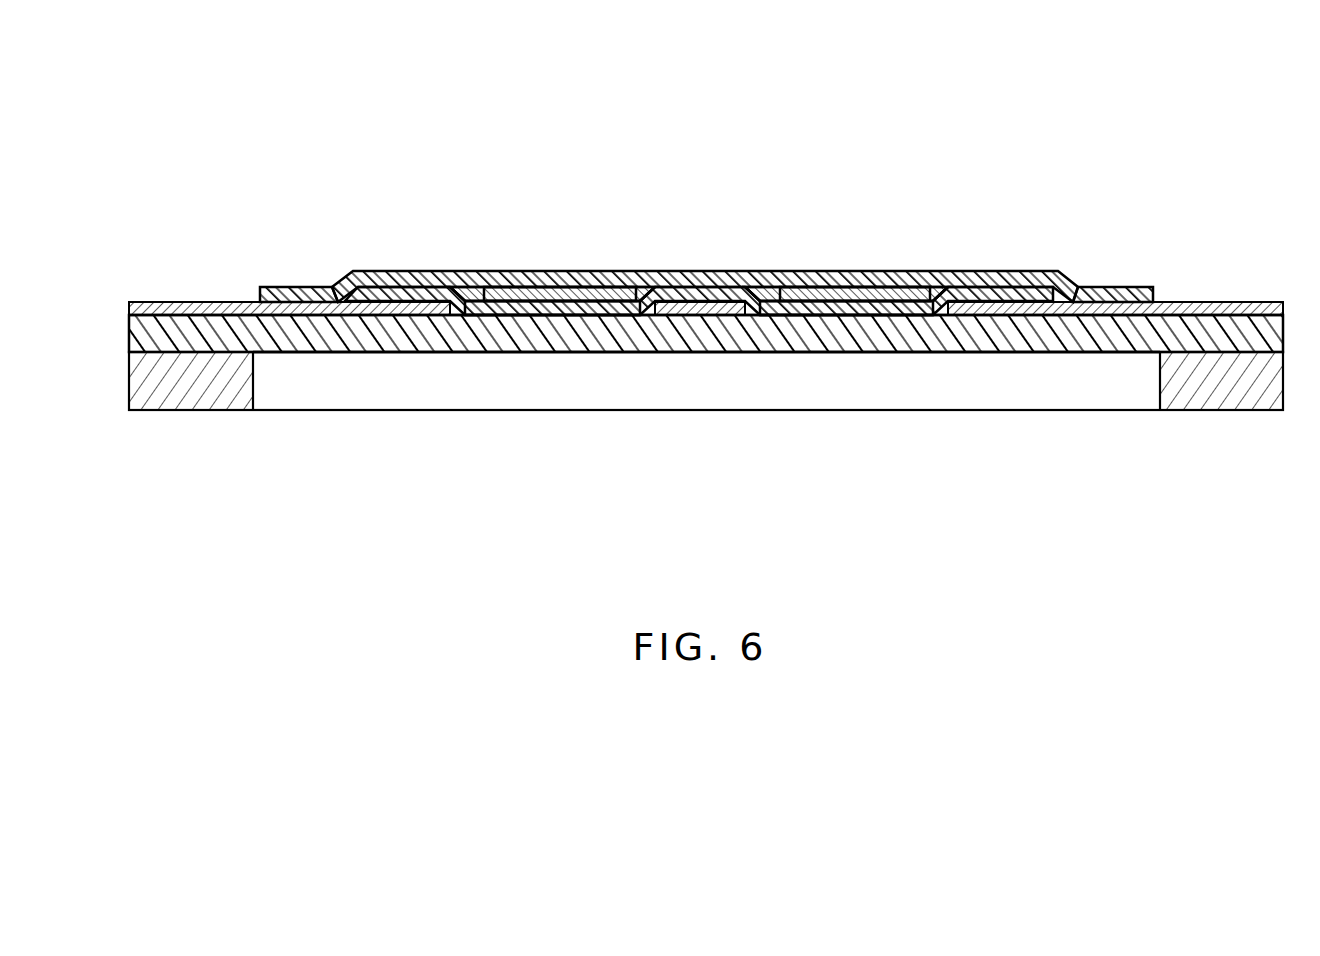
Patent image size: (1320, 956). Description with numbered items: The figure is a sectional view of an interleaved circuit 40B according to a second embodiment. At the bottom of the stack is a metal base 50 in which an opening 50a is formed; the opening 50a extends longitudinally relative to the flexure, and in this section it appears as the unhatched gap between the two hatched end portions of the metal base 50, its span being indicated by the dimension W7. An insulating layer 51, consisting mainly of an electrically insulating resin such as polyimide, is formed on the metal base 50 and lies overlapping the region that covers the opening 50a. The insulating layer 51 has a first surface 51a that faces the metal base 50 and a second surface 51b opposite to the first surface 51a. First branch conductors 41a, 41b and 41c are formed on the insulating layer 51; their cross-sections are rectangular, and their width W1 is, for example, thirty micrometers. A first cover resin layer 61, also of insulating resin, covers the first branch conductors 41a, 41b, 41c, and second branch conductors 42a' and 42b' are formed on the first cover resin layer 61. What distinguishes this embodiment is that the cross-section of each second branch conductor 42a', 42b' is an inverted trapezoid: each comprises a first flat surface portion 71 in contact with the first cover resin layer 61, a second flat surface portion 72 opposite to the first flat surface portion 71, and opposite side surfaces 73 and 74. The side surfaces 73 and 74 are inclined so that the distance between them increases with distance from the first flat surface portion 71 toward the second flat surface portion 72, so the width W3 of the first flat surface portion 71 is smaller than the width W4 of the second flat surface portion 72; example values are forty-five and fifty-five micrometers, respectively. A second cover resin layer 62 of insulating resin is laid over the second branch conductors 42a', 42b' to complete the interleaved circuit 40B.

The interleaved circuit 40B is at (1130, 157).
The metal base 50 is at (206, 398).
The opening 50a is at (883, 392).
The insulating layer 51 is at (560, 340).
The first surface 51a is at (323, 358).
The second surface 51b is at (314, 302).
The first branch conductor 41a is at (380, 300).
The first branch conductor 41b is at (714, 316).
The first branch conductor 41c is at (1000, 316).
The first cover resin layer 61 is at (622, 318).
The first flat surface portion 71 is at (510, 316).
The second flat surface portion 72 is at (526, 287).
The second branch conductor 42a' is at (560, 266).
The second branch conductor 42b' is at (855, 266).
The side surface 73 is at (452, 290).
The side surface 74 is at (652, 290).
The second cover resin layer 62 is at (998, 271).
The width W1 is at (463, 357).
The width W3 is at (636, 300).
The width W4 is at (655, 300).
The width W7 is at (253, 418).